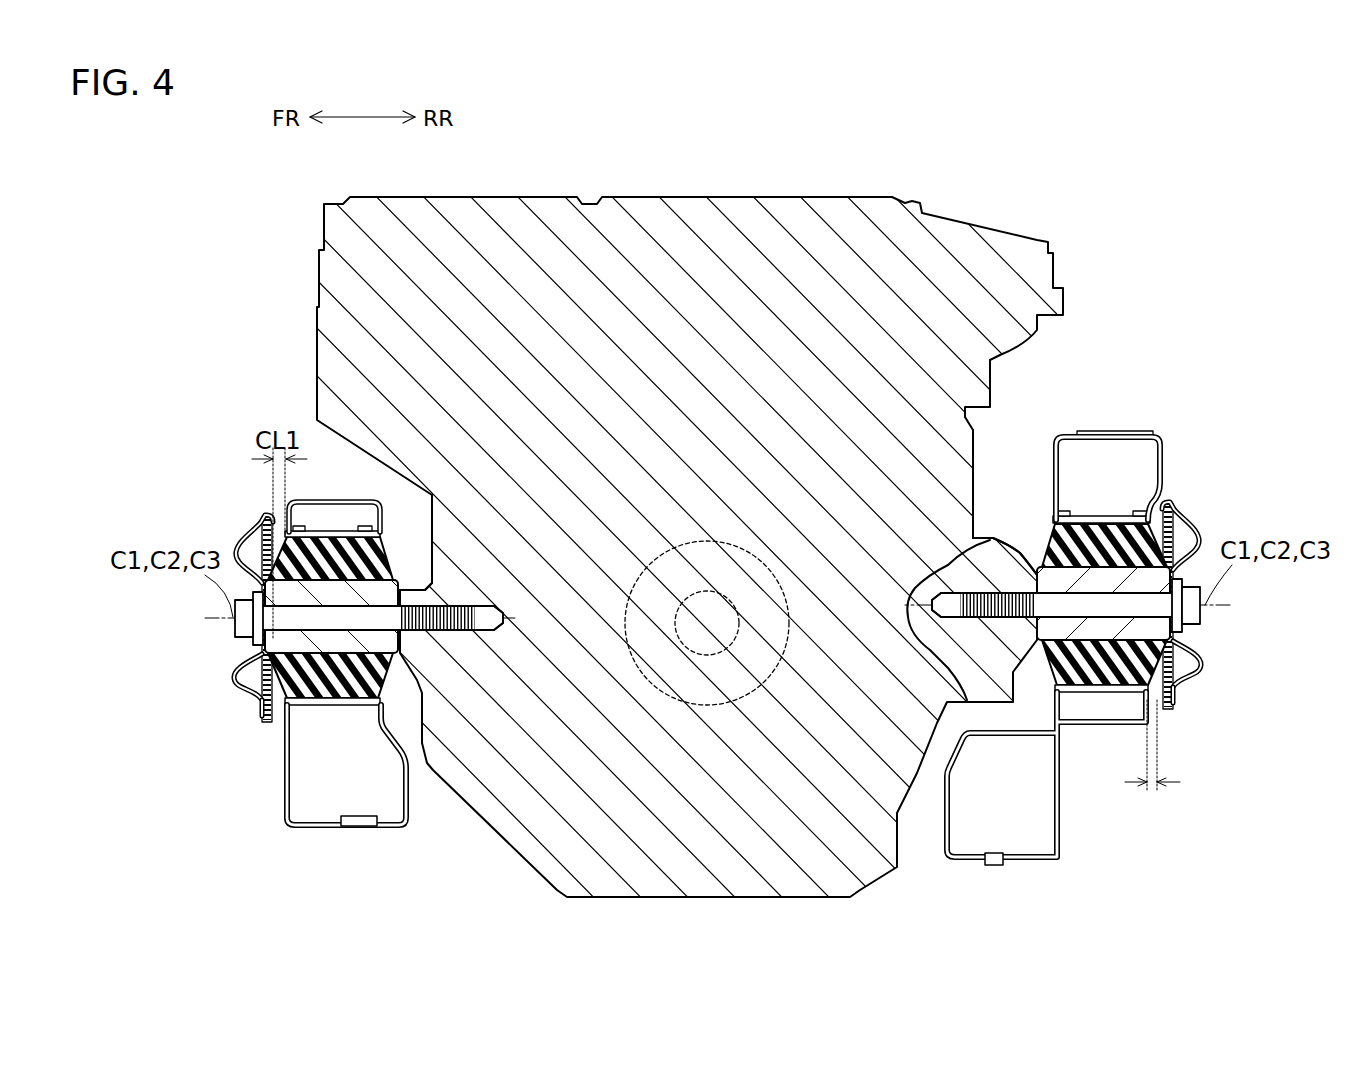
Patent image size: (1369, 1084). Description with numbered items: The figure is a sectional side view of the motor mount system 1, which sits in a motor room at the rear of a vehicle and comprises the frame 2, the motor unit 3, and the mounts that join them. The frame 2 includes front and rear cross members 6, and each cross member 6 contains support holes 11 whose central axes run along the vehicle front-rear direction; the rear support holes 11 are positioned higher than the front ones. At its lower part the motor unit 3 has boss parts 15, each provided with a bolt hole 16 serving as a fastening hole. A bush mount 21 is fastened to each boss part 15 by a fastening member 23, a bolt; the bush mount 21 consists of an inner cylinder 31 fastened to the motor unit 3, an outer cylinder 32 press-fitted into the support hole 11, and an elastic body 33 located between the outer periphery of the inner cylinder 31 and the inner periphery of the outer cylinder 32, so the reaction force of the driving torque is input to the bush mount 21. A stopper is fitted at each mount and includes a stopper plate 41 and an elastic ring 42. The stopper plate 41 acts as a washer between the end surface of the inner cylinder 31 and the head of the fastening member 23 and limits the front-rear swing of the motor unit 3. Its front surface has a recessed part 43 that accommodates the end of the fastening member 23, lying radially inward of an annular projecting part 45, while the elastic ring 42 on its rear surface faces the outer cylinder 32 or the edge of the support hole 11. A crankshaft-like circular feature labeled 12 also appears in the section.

The motor mount system 1 is at (1145, 207).
The frame 2 is at (1135, 430).
The motor unit 3 is at (973, 245).
The cross member 6 is at (358, 829).
The support hole 11 is at (360, 706).
The crankshaft hole 12 is at (715, 658).
The boss part 15 is at (413, 593).
The bolt hole 16 is at (492, 631).
The bush mount 21 is at (345, 518).
The fastening member 23 is at (240, 625).
The inner cylinder 31 is at (373, 567).
The outer cylinder 32 is at (320, 706).
The elastic body 33 is at (367, 663).
The stopper plate 41 is at (249, 533).
The elastic ring 42 is at (268, 722).
The recessed part 43 is at (240, 657).
The projecting part 45 is at (248, 692).